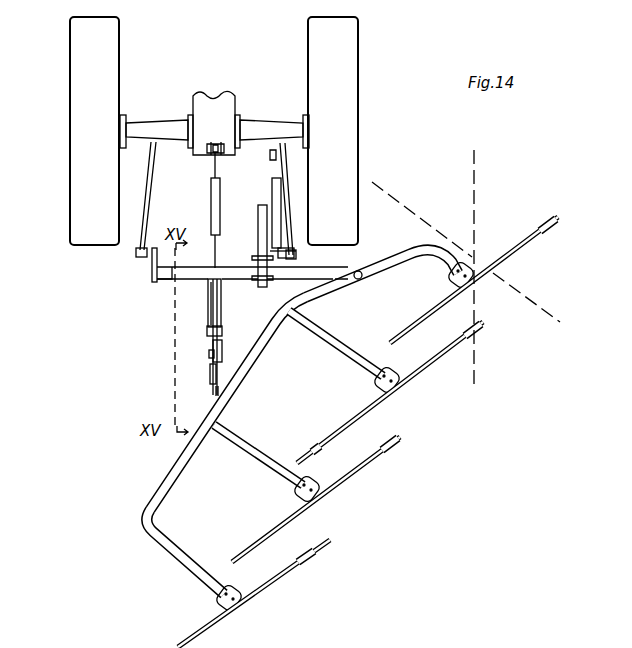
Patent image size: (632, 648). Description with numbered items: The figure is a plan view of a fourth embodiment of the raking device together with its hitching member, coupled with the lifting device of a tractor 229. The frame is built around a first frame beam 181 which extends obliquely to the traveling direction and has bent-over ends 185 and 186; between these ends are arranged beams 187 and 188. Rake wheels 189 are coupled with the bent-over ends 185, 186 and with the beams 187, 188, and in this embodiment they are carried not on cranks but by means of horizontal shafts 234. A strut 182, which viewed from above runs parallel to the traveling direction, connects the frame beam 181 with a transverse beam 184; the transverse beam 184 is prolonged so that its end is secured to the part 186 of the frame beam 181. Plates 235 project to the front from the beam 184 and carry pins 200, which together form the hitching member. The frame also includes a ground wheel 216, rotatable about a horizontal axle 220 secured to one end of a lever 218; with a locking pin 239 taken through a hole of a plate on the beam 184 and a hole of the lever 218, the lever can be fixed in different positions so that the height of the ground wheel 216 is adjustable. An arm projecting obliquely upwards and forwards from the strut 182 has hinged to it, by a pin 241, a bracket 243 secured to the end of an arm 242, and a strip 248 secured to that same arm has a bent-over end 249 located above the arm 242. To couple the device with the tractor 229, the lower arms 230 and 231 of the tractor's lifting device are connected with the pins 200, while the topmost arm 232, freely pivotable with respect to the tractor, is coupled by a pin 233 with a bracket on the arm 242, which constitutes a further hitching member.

The first frame beam 181 is at (238, 378).
The strut 182 is at (210, 388).
The transverse beam 184 is at (163, 278).
The bent-over end 185 is at (170, 557).
The bent-over end 186 is at (405, 253).
The beam 187 is at (331, 340).
The beam 188 is at (253, 448).
The rake wheel 189 is at (438, 358).
The pin 200 is at (136, 256).
The ground wheel 216 is at (273, 178).
The lever 218 is at (260, 225).
The horizontal axle 220 is at (273, 207).
The tractor 229 is at (362, 120).
The lower arm 230 is at (150, 182).
The lower arm 231 is at (289, 175).
The topmost arm 232 is at (212, 193).
The pin 233 is at (223, 280).
The horizontal shaft 234 is at (240, 598).
The plate 235 is at (152, 272).
The locking pin 239 is at (321, 294).
The pin 241 is at (209, 354).
The arm 242 is at (210, 307).
The bracket 243 is at (220, 355).
The strip 248 is at (210, 367).
The bent-over end 249 is at (220, 333).